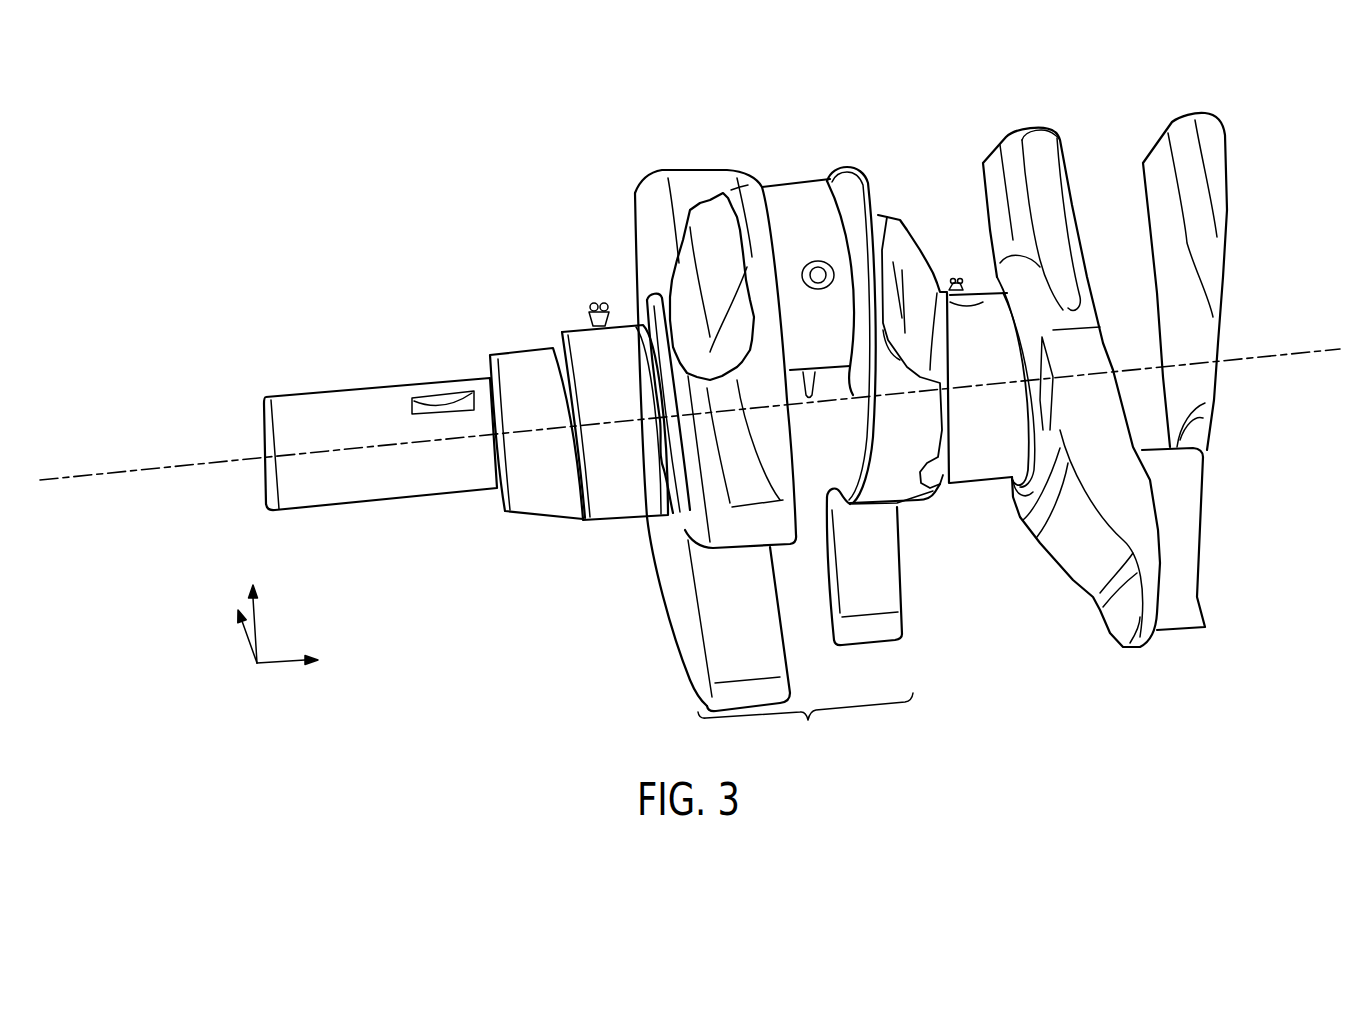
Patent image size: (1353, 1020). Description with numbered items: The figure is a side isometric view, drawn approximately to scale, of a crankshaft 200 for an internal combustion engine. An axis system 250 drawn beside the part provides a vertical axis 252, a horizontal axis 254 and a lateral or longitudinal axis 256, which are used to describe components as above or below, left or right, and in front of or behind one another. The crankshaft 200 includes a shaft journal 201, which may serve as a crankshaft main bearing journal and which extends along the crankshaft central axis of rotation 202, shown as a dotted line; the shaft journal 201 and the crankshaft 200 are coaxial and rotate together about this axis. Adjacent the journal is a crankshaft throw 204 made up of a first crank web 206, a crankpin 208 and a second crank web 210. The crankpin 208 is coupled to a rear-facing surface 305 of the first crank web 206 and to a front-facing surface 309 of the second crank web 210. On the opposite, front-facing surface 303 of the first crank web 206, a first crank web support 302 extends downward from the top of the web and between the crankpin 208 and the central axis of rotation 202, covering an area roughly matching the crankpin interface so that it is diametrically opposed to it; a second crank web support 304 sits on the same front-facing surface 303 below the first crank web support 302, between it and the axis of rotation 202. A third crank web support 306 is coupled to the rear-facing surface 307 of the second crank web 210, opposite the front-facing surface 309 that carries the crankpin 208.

The crankshaft 200 is at (734, 414).
The shaft journal 201 is at (360, 393).
The crankshaft central axis of rotation 202 is at (195, 460).
The crankshaft throw 204 is at (805, 725).
The first crank web 206 is at (689, 403).
The crankpin 208 is at (816, 340).
The second crank web 210 is at (868, 215).
The axis system 250 is at (240, 613).
The vertical axis 252 is at (257, 620).
The horizontal axis 254 is at (250, 643).
The lateral axis 256 is at (264, 666).
The first crank web support 302 is at (688, 263).
The front-facing surface 303 is at (718, 187).
The second crank web support 304 is at (647, 322).
The rear-facing surface 305 is at (837, 279).
The third crank web support 306 is at (903, 260).
The rear-facing surface 307 is at (889, 357).
The front-facing surface 309 is at (889, 286).